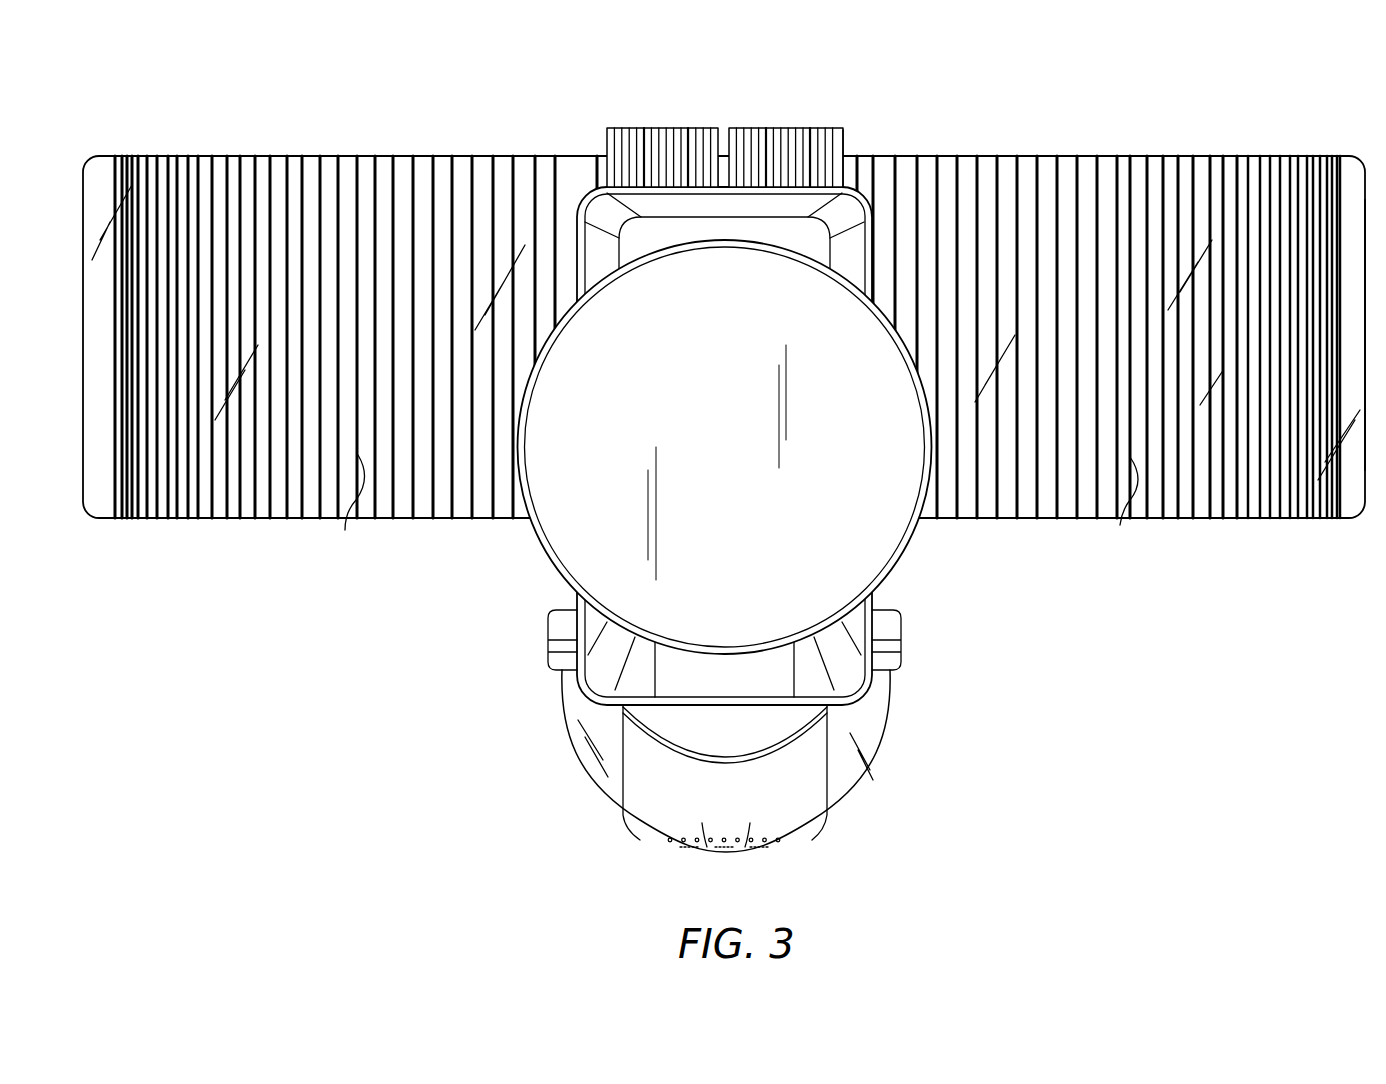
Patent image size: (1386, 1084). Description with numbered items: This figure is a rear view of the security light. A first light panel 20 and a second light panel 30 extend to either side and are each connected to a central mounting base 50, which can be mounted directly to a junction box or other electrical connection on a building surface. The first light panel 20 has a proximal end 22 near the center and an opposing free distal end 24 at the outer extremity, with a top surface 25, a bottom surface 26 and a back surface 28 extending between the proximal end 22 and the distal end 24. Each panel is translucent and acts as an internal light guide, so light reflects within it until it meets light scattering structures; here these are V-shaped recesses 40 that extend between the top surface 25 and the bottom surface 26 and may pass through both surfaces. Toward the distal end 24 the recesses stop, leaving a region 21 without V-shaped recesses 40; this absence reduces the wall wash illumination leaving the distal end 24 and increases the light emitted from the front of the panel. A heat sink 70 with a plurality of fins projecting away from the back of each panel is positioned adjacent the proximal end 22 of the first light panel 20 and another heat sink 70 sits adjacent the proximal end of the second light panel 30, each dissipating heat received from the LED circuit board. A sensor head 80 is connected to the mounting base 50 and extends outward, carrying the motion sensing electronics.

The first light panel 20 is at (1025, 130).
The region 21 is at (1362, 527).
The proximal end 22 is at (852, 141).
The distal end 24 is at (1354, 147).
The top surface 25 is at (1172, 157).
The bottom surface 26 is at (1235, 518).
The back surface 28 is at (1007, 502).
The second light panel 30 is at (348, 150).
The V-shaped recesses 40 is at (1120, 525).
The mounting base 50 is at (893, 571).
The heat sink 70 is at (790, 127).
The sensor head 80 is at (850, 786).